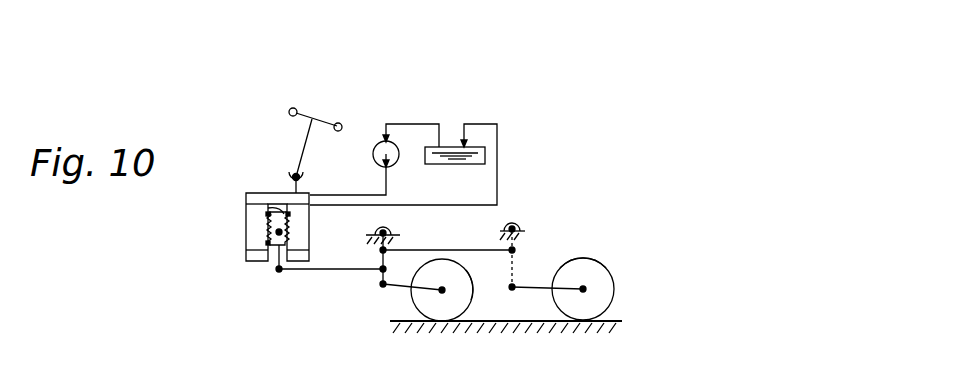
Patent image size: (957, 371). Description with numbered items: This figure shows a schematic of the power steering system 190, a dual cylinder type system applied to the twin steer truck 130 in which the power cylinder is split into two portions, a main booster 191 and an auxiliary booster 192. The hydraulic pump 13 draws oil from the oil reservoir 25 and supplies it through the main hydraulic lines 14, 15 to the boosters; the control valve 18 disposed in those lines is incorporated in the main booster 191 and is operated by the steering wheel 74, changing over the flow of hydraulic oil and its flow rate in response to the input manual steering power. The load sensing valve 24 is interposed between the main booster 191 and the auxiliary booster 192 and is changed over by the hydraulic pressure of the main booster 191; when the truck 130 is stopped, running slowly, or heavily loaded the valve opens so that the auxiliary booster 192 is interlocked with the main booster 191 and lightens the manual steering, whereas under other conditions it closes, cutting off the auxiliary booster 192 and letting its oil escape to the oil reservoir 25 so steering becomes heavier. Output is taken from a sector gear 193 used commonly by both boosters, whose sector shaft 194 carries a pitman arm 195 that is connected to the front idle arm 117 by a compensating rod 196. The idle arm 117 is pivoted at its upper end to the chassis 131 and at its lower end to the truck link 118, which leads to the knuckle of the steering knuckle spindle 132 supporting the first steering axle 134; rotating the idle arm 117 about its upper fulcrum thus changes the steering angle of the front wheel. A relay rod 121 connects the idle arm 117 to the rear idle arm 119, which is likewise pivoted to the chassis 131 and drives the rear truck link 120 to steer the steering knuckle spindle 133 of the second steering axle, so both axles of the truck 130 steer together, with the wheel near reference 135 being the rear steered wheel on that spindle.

The hydraulic pump 13 is at (375, 142).
The main hydraulic line 14 is at (388, 191).
The main hydraulic line 15 is at (500, 152).
The control valve 18 is at (312, 193).
The load sensing valve 24 is at (276, 192).
The oil reservoir 25 is at (458, 165).
The steering wheel 74 is at (313, 118).
The idle arm 117 is at (380, 272).
The truck link 118 is at (380, 287).
The idle arm 119 is at (513, 268).
The truck link 120 is at (536, 289).
The relay rod 121 is at (430, 250).
The truck 130 is at (546, 232).
The chassis 131 is at (392, 236).
The steering knuckle spindle 132 is at (442, 290).
The steering knuckle spindle 133 is at (583, 289).
The first steering axle 134 is at (472, 292).
The wheel rim 135 is at (584, 258).
The power steering system 190 is at (466, 74).
The main booster 191 is at (312, 242).
The auxiliary booster 192 is at (246, 230).
The sector gear 193 is at (268, 208).
The sector shaft 194 is at (246, 256).
The pitman arm 195 is at (276, 262).
The compensating rod 196 is at (322, 271).